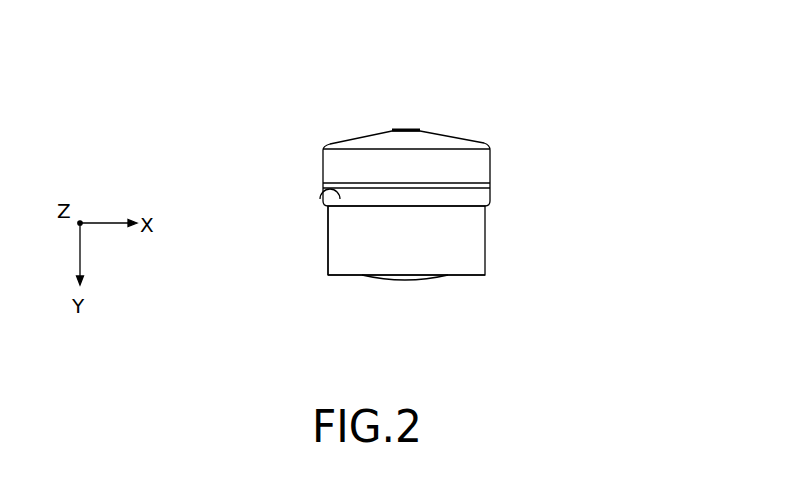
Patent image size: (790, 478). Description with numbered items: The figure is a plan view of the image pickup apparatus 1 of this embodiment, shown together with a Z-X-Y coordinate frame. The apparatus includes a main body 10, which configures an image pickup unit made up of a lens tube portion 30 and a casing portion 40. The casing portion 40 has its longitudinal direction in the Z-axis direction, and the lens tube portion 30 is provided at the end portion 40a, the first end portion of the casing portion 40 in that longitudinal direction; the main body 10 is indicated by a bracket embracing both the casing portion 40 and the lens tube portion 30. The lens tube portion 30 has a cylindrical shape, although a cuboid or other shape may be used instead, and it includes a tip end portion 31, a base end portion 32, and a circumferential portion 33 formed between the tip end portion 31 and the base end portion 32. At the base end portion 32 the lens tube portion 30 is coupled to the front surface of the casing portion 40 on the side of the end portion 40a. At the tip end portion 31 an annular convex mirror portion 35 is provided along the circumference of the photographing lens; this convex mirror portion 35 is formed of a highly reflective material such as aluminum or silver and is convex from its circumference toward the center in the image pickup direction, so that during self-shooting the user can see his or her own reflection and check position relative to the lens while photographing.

The image pickup apparatus 1 is at (623, 85).
The main body 10 is at (588, 142).
The lens tube portion 30 is at (485, 238).
The tip end portion 31 is at (337, 277).
The base end portion 32 is at (318, 203).
The circumferential portion 33 is at (347, 243).
The convex mirror portion 35 is at (410, 280).
The casing portion 40 is at (490, 165).
The end portion 40a is at (337, 165).